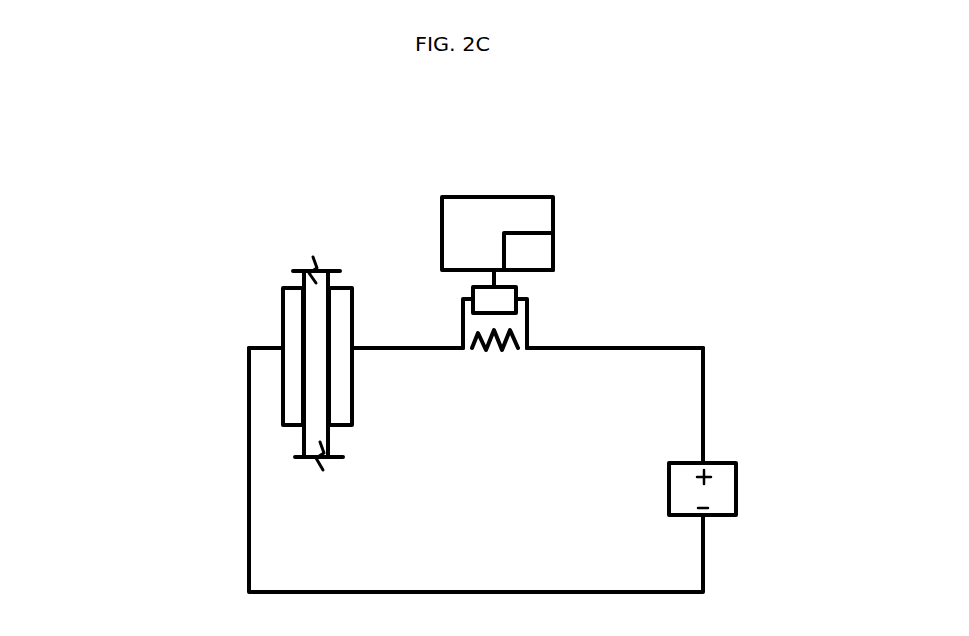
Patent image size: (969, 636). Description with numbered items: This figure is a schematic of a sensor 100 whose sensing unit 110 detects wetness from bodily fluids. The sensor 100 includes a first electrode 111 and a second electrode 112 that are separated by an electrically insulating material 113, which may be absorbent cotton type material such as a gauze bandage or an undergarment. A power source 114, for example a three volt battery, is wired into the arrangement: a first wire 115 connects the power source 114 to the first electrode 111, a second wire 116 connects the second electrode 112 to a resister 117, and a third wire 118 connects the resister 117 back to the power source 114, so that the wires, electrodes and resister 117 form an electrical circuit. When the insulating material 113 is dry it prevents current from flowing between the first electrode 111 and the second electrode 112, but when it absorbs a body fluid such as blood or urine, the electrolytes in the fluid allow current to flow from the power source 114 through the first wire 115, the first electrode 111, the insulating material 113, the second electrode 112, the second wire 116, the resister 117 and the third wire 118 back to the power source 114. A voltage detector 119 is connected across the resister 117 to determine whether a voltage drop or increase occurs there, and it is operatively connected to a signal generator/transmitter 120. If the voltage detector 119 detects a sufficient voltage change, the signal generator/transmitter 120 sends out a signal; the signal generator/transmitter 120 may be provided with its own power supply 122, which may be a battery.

The sensor 100 is at (112, 262).
The sensing unit 110 is at (182, 371).
The first electrode 111 is at (283, 308).
The second electrode 112 is at (412, 283).
The electrically insulating material 113 is at (295, 272).
The power source 114 is at (722, 462).
The first wire 115 is at (249, 518).
The second wire 116 is at (380, 347).
The resister 117 is at (520, 345).
The third wire 118 is at (635, 347).
The voltage detector 119 is at (517, 290).
The signal generator/transmitter 120 is at (490, 197).
The power supply 122 is at (532, 250).